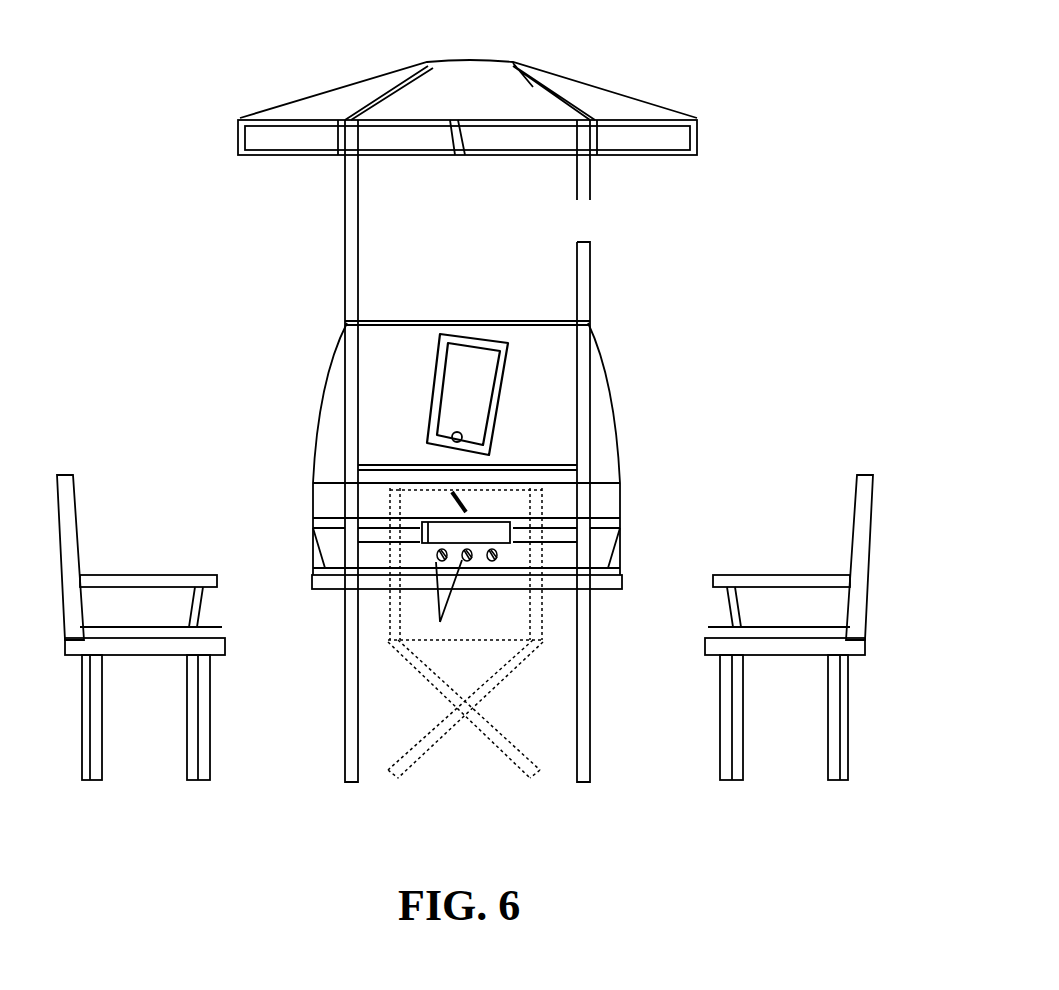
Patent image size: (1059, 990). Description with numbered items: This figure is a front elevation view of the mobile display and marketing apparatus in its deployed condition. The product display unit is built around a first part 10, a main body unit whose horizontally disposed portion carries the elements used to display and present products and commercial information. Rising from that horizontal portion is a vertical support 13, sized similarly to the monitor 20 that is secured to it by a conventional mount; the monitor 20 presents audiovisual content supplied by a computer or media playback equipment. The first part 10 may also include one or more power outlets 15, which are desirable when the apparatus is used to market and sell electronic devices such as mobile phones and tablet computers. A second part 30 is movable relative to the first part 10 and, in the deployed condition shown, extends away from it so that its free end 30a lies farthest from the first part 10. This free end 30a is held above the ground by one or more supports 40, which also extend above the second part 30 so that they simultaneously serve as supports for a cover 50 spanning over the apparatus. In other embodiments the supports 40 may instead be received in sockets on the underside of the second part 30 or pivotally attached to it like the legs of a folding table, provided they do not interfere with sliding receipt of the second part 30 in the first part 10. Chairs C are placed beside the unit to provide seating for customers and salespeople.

The first part 10 is at (630, 480).
The vertical support 13 is at (612, 386).
The power outlets 15 is at (467, 556).
The monitor 20 is at (413, 347).
The second part 30 is at (607, 572).
The free end 30a is at (494, 558).
The supports 40 is at (358, 242).
The cover 50 is at (597, 92).
The chairs C is at (147, 573).